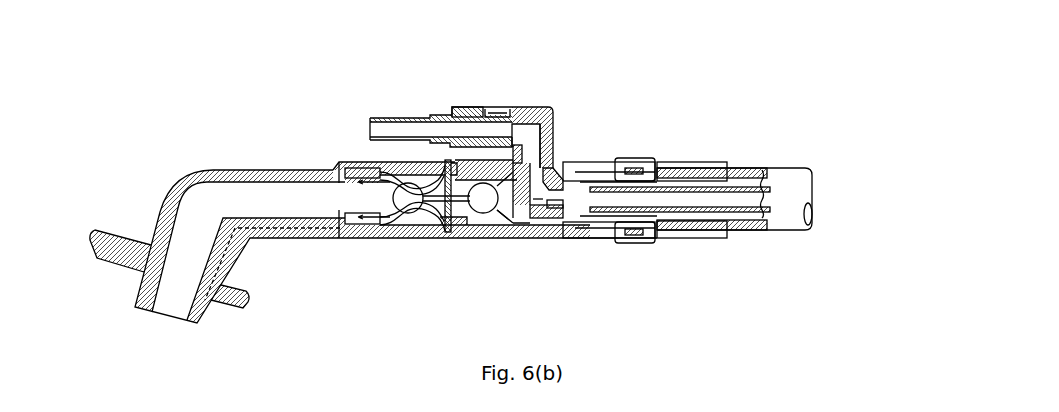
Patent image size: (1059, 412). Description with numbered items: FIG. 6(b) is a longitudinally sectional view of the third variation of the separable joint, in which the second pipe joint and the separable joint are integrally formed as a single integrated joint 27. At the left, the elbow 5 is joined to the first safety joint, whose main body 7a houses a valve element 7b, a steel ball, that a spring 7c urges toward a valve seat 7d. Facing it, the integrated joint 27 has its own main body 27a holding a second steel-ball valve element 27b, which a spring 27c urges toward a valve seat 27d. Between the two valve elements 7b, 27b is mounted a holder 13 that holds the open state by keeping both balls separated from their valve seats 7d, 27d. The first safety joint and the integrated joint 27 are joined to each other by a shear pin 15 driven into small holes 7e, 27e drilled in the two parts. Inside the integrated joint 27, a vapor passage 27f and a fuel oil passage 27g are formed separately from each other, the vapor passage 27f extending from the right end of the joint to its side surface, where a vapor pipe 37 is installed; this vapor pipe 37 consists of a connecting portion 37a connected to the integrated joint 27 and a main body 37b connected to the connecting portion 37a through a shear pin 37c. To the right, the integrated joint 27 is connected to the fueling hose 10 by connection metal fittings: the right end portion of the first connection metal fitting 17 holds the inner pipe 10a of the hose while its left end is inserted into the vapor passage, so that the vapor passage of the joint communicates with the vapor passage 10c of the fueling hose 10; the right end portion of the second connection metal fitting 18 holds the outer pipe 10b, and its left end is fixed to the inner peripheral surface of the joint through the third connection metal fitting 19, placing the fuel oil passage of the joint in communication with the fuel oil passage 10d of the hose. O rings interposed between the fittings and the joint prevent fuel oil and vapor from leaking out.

The elbow 5 is at (213, 170).
The main body 7a is at (375, 150).
The valve element 7b is at (412, 205).
The spring 7c is at (360, 183).
The valve seat 7d is at (402, 183).
The small hole 7e is at (432, 188).
The holder 13 is at (438, 213).
The shear pin 15 is at (446, 165).
The integrated joint 27 is at (547, 234).
The main body 27a is at (478, 161).
The valve element 27b is at (482, 204).
The spring 27c is at (500, 222).
The valve seat 27d is at (460, 207).
The small hole 27e is at (446, 210).
The vapor passage 27f is at (533, 198).
The fuel oil passage 27g is at (512, 220).
The vapor pipe 37 is at (553, 122).
The connecting portion 37a is at (537, 115).
The main body 37b is at (475, 107).
The shear pin 37c is at (493, 114).
The fueling hose 10 is at (790, 168).
The inner pipe 10a is at (752, 218).
The outer pipe 10b is at (742, 167).
The vapor passage 10c is at (758, 195).
The fuel oil passage 10d is at (742, 217).
The first connection metal fitting 17 is at (578, 240).
The second connection metal fitting 18 is at (697, 239).
The third connection metal fitting 19 is at (637, 243).